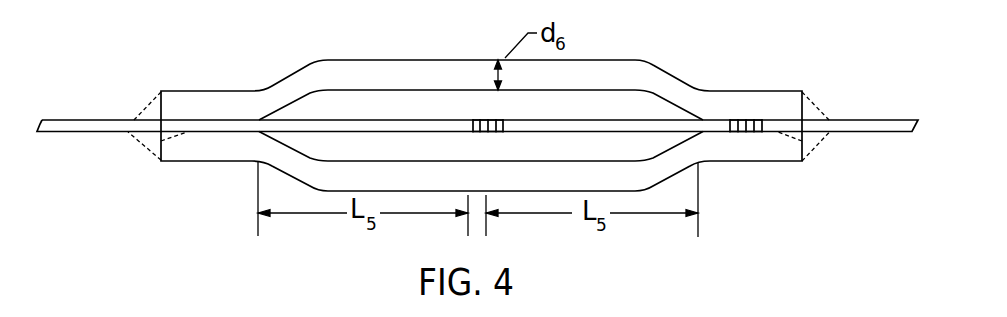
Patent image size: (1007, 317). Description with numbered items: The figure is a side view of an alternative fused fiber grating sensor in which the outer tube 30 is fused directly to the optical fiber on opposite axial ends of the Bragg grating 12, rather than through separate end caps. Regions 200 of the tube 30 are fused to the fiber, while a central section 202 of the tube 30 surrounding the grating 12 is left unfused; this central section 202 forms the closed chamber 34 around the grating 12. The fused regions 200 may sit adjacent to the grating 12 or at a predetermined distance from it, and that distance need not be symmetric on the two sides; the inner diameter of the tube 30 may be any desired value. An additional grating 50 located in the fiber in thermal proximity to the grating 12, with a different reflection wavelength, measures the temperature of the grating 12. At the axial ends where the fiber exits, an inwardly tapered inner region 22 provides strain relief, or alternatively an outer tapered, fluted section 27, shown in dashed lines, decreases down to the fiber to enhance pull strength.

The Bragg grating 12 is at (472, 125).
The inner tapered region 22 is at (173, 139).
The outer tapered section 27 is at (185, 121).
The outer tube 30 is at (602, 70).
The chamber 34 is at (481, 147).
The additional grating 50 is at (752, 120).
The fused regions 200 is at (207, 120).
The central section 202 is at (342, 102).